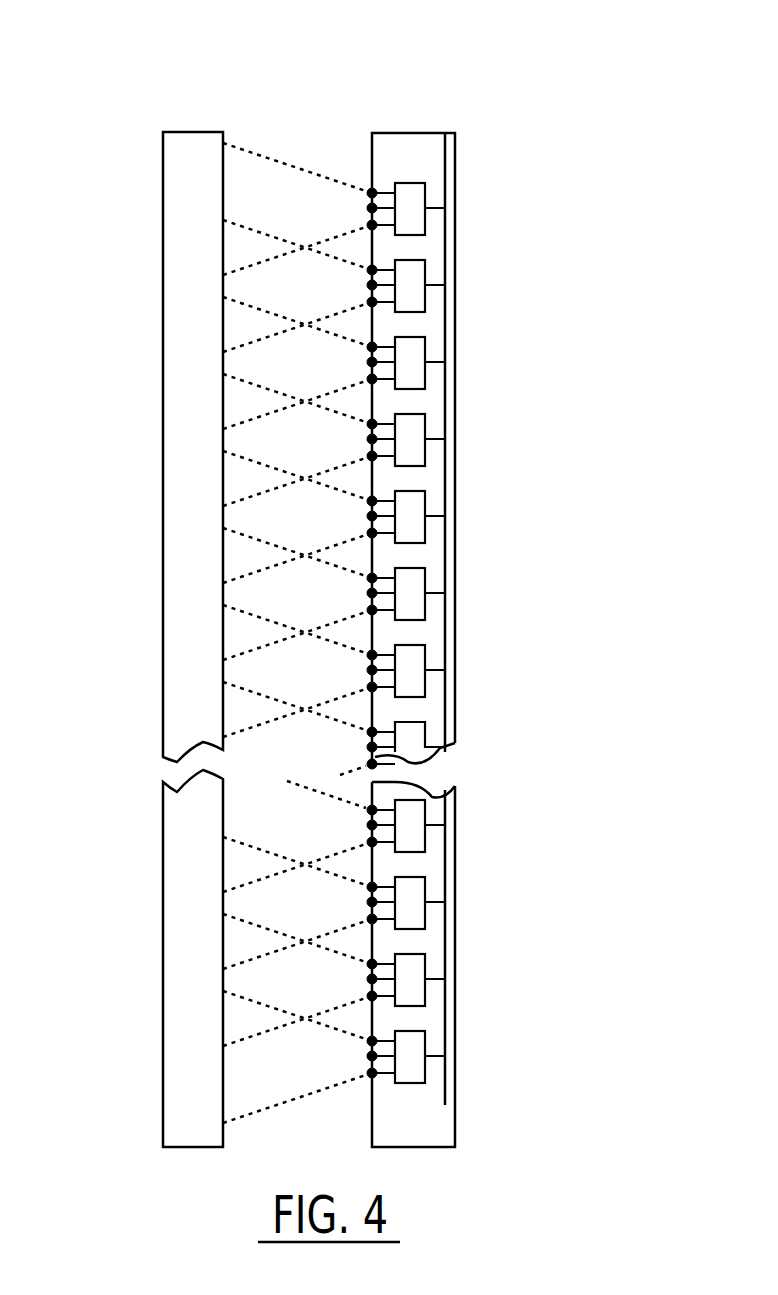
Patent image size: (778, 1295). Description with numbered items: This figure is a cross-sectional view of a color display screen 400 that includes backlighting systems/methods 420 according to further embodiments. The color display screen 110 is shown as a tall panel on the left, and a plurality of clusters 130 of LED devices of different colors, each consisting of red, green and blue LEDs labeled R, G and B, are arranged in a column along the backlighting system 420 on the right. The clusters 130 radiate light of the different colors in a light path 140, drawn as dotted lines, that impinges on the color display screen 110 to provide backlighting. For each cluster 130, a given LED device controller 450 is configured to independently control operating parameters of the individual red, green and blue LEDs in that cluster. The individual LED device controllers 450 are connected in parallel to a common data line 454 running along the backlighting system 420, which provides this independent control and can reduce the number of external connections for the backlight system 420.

The color display screen 400 is at (222, 85).
The color display screen 110 is at (163, 217).
The light path 140 is at (246, 150).
The clusters of LED devices 130 is at (340, 210).
The backlighting system 420 is at (502, 115).
The LED device controller 450 is at (408, 197).
The common data line 454 is at (445, 262).